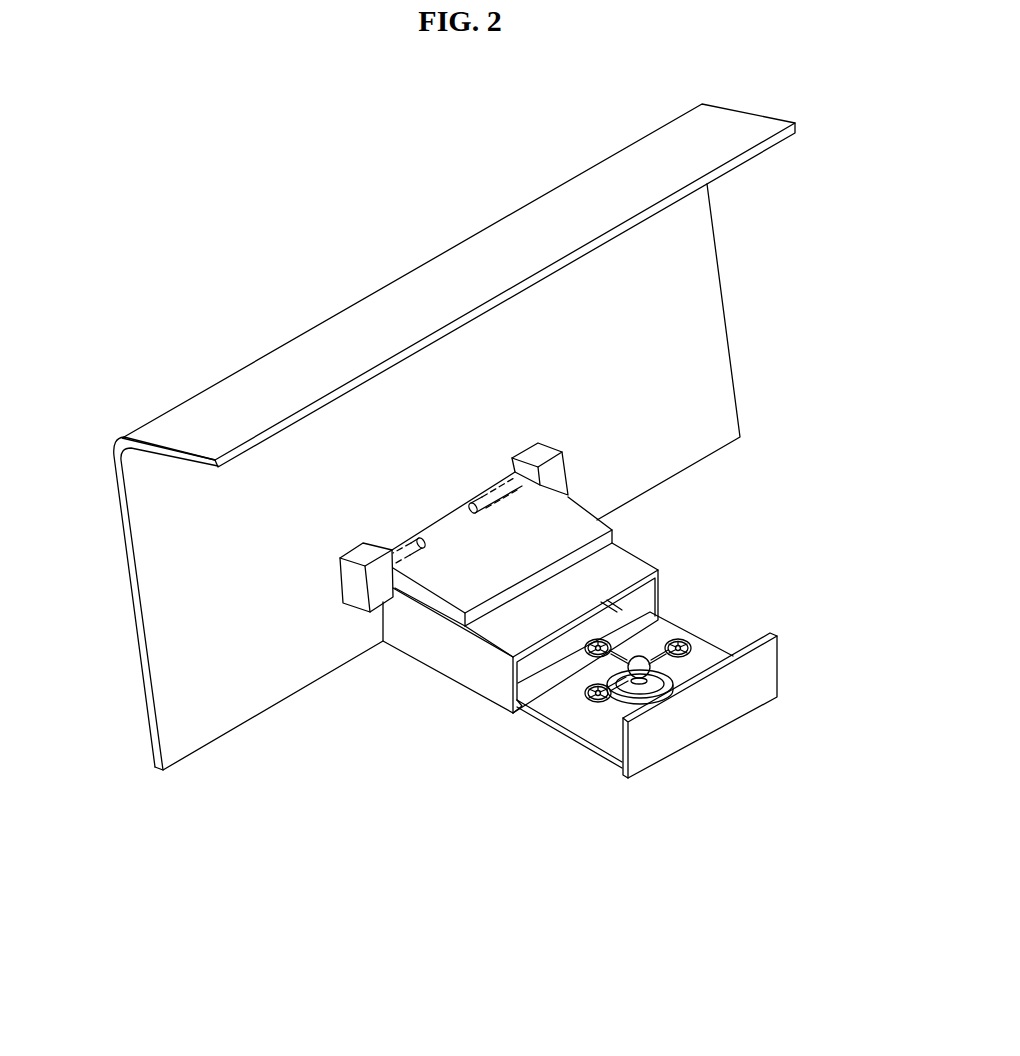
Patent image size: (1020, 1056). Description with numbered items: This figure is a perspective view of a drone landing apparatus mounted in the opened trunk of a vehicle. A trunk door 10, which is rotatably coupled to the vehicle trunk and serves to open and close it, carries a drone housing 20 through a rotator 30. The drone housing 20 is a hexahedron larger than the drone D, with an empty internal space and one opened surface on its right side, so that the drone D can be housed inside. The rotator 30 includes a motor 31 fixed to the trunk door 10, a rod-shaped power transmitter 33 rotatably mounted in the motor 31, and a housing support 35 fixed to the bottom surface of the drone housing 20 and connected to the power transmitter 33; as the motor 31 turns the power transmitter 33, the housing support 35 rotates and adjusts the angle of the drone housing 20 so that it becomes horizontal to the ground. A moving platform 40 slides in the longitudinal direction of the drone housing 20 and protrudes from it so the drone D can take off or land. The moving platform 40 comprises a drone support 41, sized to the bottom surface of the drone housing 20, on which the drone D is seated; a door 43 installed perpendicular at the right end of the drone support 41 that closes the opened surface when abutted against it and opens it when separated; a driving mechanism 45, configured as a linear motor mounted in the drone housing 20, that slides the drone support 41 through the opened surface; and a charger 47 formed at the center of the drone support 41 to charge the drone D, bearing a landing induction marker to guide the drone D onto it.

The trunk door 10 is at (680, 322).
The drone housing 20 is at (642, 567).
The rotator 30 is at (474, 623).
The motor 31 is at (355, 587).
The power transmitter 33 is at (412, 554).
The housing support 35 is at (474, 594).
The moving platform 40 is at (639, 734).
The drone support 41 is at (587, 720).
The door 43 is at (655, 742).
The driving mechanism 45 is at (592, 620).
The charger 47 is at (622, 703).
The drone D is at (694, 642).